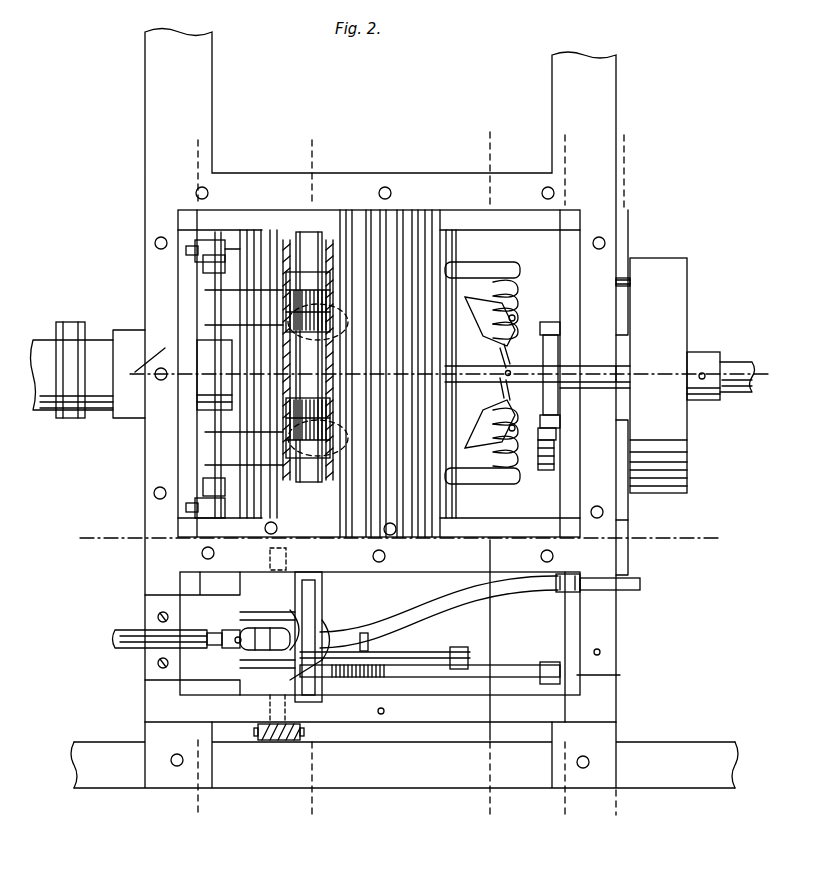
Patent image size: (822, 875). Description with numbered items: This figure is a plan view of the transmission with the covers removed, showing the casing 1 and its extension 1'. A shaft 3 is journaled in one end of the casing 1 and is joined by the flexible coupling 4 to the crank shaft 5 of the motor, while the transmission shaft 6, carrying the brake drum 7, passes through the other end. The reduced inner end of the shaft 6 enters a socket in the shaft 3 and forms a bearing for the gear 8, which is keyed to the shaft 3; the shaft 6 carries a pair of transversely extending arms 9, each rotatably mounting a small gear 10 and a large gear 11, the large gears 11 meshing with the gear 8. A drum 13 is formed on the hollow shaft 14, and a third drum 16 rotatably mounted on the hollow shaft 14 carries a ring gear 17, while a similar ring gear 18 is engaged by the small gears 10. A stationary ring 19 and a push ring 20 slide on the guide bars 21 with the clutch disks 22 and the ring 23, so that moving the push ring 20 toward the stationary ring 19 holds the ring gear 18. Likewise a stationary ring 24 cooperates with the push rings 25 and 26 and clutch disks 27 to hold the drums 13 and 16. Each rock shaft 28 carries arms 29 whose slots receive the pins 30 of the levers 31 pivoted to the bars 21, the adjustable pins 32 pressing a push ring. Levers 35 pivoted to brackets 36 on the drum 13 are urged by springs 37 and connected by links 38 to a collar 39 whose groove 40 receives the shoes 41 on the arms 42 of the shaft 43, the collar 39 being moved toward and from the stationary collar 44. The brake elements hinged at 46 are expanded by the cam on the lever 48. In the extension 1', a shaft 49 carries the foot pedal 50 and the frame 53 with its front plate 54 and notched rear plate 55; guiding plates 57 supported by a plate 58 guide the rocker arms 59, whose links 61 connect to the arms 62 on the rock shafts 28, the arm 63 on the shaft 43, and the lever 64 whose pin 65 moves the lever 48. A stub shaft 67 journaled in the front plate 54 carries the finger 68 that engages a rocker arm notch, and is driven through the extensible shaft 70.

The casing 1 is at (404, 409).
The extension of the casing 1' is at (580, 640).
The shaft 3 is at (450, 362).
The flexible coupling 4 is at (72, 305).
The crank shaft 5 is at (30, 340).
The transmission shaft 6 is at (745, 368).
The brake drum 7 is at (707, 319).
The gear 8 is at (564, 476).
The transversely extending arms 9 is at (623, 475).
The small gear 10 is at (240, 284).
The large gear 11 is at (283, 322).
The drum 13 is at (470, 322).
The hollow shaft 14 is at (502, 369).
The third drum 16 is at (346, 210).
The ring gear 17 is at (315, 357).
The ring gear 18 is at (317, 425).
The stationary ring 19 is at (276, 230).
The push ring 20 is at (243, 230).
The guide bars 21 is at (468, 210).
The clutch disks 22 is at (260, 356).
The ring 23 is at (258, 230).
The stationary ring 24 is at (393, 210).
The push ring 25 is at (369, 210).
The push ring 26 is at (422, 210).
The clutch disks 27 is at (440, 367).
The rock shaft 28 is at (178, 428).
The arms 29 is at (203, 486).
The pins 30 is at (203, 263).
The levers 31 is at (220, 230).
The pins 32 is at (195, 250).
The levers 35 is at (492, 396).
The brackets 36 is at (500, 270).
The springs 37 is at (520, 300).
The link 38 is at (512, 350).
The collar 39 is at (558, 352).
The groove 40 is at (590, 360).
The shoes 41 is at (560, 332).
The arms 42 is at (556, 434).
The shaft 43 is at (556, 453).
The stationary collar 44 is at (590, 390).
The hinge 46 is at (630, 282).
The lever 48 is at (628, 521).
The shaft 49 is at (272, 562).
The foot pedal 50 is at (278, 740).
The frame 53 is at (310, 705).
The front plate 54 is at (290, 680).
The rear plate 55 is at (322, 602).
The guiding plates 57 is at (318, 655).
The plate 58 is at (160, 603).
The rocker arms 59 is at (240, 665).
The links 61 is at (521, 590).
The arms 62 is at (368, 640).
The arm 63 is at (620, 677).
The lever 64 is at (576, 574).
The pin 65 is at (640, 584).
The stub shaft 67 is at (240, 632).
The finger 68 is at (290, 634).
The extensible shaft 70 is at (118, 646).